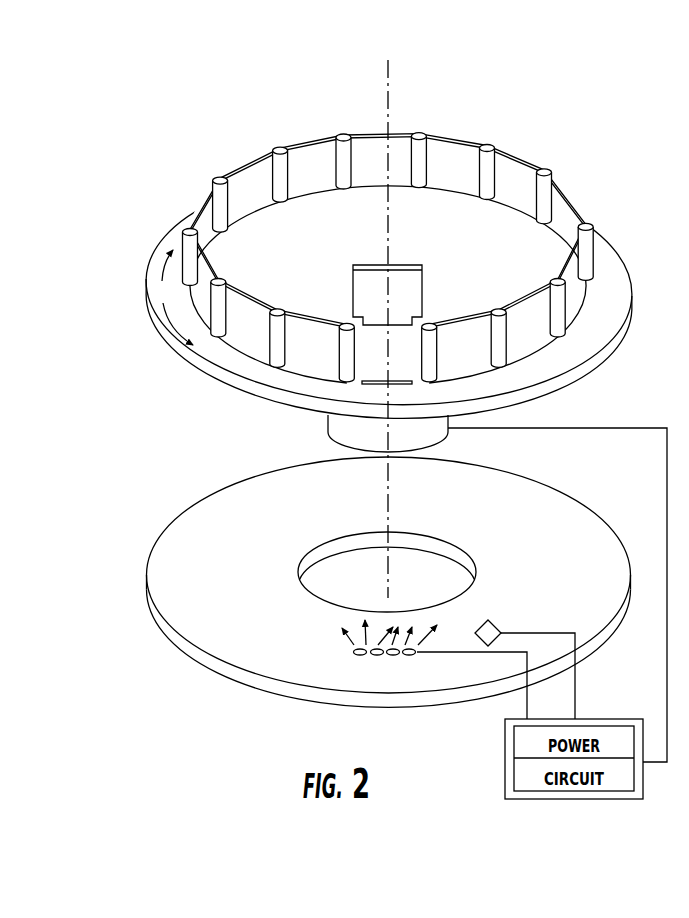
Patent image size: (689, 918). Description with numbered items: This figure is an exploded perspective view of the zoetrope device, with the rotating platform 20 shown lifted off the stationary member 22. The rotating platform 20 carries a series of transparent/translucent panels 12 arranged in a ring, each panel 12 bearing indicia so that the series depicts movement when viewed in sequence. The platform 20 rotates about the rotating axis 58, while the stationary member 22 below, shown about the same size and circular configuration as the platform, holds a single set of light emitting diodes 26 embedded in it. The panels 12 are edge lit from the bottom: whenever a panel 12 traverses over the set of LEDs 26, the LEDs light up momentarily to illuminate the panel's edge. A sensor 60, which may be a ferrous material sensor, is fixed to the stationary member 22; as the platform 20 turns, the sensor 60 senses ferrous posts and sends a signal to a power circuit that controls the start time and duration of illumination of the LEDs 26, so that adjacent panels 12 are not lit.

The transparent/translucent panel 12 is at (408, 283).
The rotating platform 20 is at (115, 250).
The stationary member 22 is at (115, 543).
The light emitting diodes 26 is at (425, 656).
The rotating axis 58 is at (388, 101).
The sensor 60 is at (497, 624).